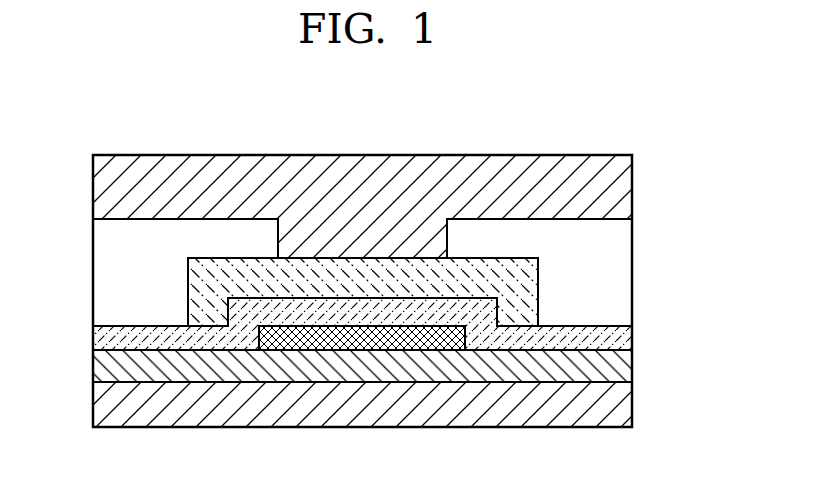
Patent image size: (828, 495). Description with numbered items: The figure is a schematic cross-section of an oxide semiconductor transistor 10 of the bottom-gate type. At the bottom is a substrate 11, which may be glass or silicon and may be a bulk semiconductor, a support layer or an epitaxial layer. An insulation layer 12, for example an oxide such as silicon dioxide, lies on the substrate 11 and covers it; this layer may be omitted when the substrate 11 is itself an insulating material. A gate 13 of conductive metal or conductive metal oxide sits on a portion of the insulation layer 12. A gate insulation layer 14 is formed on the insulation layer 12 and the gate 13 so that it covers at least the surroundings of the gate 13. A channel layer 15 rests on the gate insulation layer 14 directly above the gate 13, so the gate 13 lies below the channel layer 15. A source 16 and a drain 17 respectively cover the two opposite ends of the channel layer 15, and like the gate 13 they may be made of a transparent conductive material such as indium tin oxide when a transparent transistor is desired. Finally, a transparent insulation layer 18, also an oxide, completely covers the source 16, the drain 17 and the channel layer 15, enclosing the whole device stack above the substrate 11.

The oxide semiconductor transistor 10 is at (46, 406).
The substrate 11 is at (627, 405).
The insulation layer 12 is at (627, 368).
The gate 13 is at (360, 340).
The gate insulation layer 14 is at (627, 338).
The channel layer 15 is at (362, 272).
The source 16 is at (97, 272).
The drain 17 is at (627, 272).
The transparent insulation layer 18 is at (627, 188).